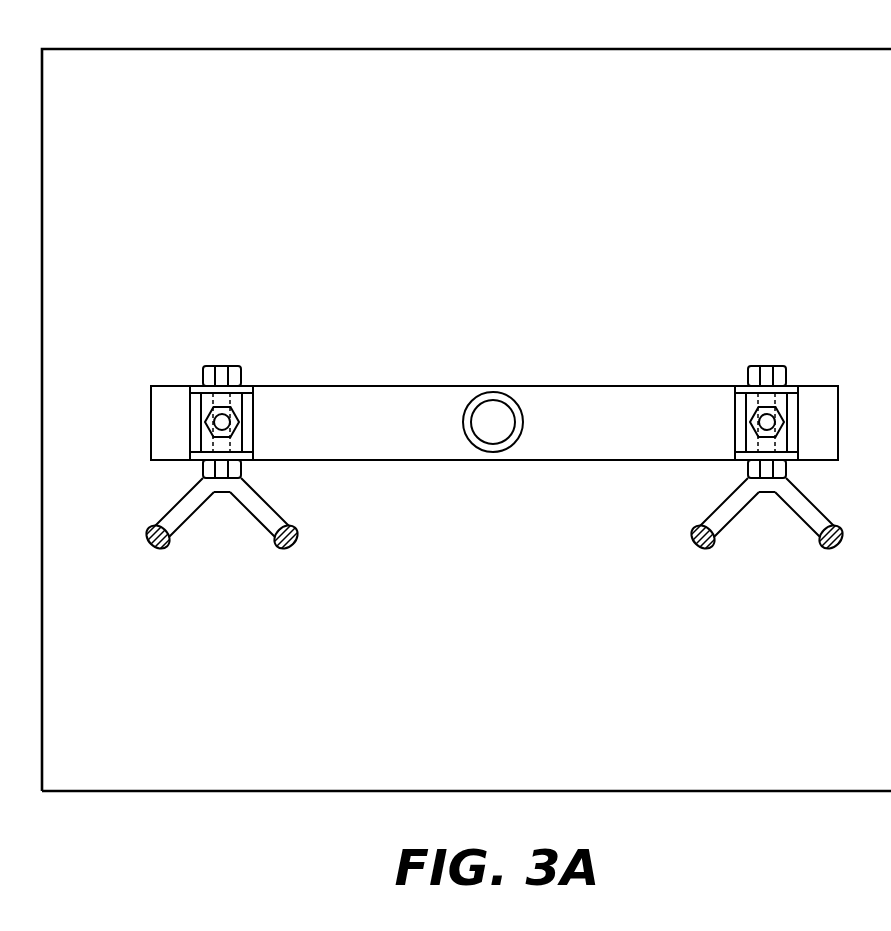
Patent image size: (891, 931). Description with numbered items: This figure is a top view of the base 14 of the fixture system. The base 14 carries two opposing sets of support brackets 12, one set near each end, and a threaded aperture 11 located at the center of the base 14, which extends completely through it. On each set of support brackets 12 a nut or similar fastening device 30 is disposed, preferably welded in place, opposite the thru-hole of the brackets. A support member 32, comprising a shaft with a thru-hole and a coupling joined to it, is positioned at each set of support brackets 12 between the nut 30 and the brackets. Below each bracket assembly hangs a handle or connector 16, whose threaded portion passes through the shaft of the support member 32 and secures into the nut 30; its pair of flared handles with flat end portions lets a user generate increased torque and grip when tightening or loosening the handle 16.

The aperture 11 is at (492, 420).
The support brackets 12 is at (188, 415).
The base 14 is at (397, 380).
The handle 16 is at (223, 512).
The nut 30 is at (220, 377).
The support member 32 is at (243, 413).